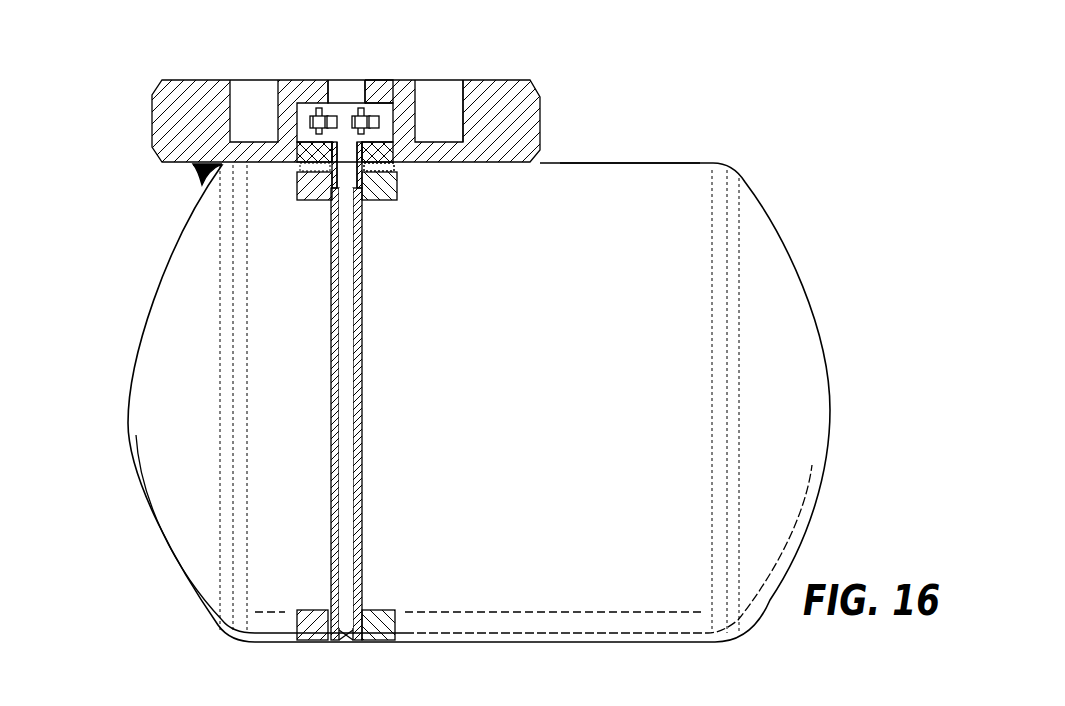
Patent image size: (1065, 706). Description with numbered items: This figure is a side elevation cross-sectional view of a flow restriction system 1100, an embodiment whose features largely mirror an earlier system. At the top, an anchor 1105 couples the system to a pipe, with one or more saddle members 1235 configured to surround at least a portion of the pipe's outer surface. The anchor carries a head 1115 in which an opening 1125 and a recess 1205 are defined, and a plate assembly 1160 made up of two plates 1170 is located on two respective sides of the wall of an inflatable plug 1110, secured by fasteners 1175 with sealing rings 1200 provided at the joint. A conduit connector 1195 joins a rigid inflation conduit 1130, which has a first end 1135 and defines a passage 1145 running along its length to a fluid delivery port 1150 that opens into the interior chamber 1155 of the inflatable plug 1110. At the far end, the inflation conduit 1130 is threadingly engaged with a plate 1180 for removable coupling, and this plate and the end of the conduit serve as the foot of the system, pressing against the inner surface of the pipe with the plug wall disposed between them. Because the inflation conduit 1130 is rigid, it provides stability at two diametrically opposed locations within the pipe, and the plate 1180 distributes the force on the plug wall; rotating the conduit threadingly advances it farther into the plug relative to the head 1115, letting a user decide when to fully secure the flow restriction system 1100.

The flow restriction system 1100 is at (752, 129).
The anchor 1105 is at (140, 96).
The inflatable plug 1110 is at (787, 378).
The head 1115 is at (541, 120).
The opening 1125 is at (347, 90).
The inflation conduit 1130 is at (362, 352).
The first end 1135 is at (367, 199).
The passage 1145 is at (345, 438).
The fluid delivery port 1150 is at (346, 597).
The interior chamber 1155 is at (630, 203).
The plate assembly 1160 is at (284, 172).
The plates 1170 is at (385, 115).
The fasteners 1175 is at (315, 107).
The plate 1180 is at (312, 610).
The conduit connector 1195 is at (350, 195).
The sealing rings 1200 is at (375, 172).
The recess 1205 is at (386, 103).
The saddle member 1235 is at (198, 176).